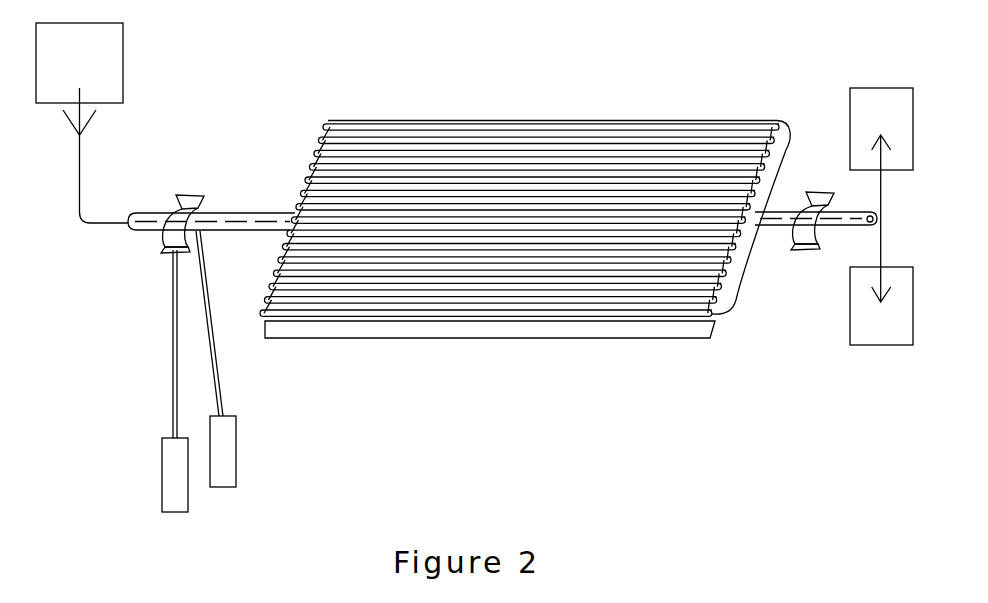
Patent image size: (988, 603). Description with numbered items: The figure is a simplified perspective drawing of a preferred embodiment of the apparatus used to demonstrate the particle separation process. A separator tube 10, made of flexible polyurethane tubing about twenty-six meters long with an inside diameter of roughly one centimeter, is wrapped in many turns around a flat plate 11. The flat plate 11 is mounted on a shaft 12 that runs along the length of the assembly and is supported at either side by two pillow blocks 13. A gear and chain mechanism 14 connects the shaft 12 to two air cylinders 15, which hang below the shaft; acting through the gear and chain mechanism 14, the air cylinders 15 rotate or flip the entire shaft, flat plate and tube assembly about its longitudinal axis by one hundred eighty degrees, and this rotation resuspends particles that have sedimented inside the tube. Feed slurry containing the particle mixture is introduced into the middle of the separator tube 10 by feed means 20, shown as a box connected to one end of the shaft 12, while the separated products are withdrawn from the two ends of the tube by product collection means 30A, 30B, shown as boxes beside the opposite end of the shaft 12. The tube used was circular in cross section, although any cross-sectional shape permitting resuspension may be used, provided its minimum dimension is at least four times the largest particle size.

The separator tube 10 is at (408, 302).
The flat plate 11 is at (513, 331).
The shaft 12 is at (238, 213).
The pillow blocks 13 is at (188, 197).
The gear and chain mechanism 14 is at (173, 313).
The air cylinders 15 is at (187, 512).
The feed means 20 is at (82, 123).
The product collection means 30A is at (881, 153).
The product collection means 30B is at (881, 282).